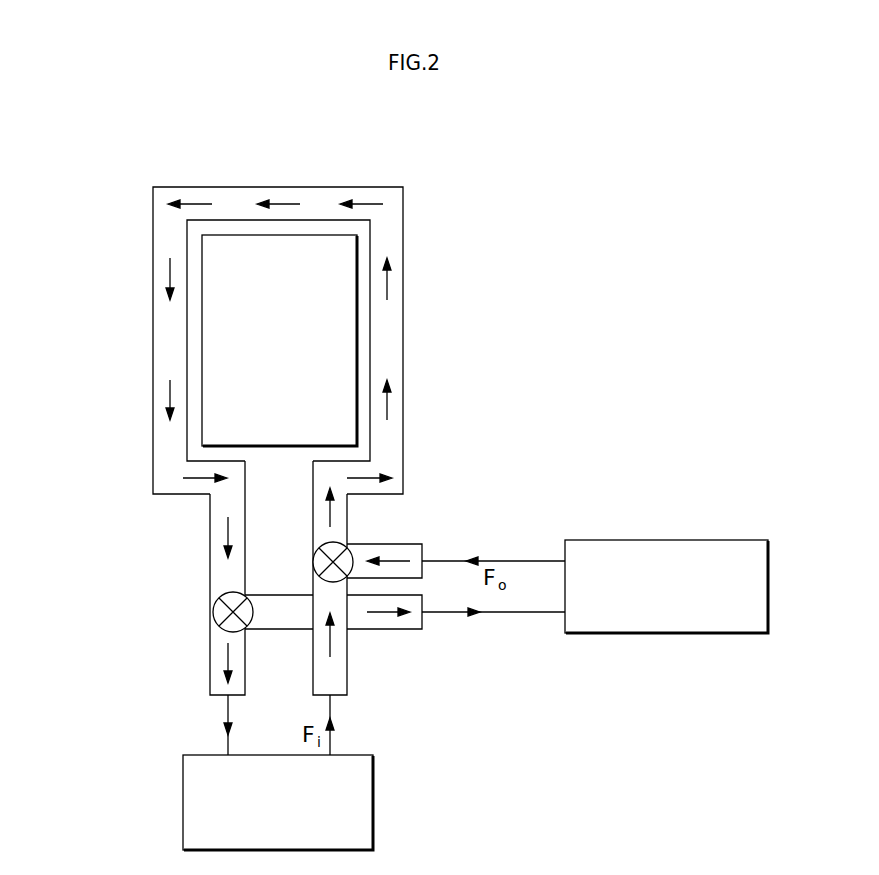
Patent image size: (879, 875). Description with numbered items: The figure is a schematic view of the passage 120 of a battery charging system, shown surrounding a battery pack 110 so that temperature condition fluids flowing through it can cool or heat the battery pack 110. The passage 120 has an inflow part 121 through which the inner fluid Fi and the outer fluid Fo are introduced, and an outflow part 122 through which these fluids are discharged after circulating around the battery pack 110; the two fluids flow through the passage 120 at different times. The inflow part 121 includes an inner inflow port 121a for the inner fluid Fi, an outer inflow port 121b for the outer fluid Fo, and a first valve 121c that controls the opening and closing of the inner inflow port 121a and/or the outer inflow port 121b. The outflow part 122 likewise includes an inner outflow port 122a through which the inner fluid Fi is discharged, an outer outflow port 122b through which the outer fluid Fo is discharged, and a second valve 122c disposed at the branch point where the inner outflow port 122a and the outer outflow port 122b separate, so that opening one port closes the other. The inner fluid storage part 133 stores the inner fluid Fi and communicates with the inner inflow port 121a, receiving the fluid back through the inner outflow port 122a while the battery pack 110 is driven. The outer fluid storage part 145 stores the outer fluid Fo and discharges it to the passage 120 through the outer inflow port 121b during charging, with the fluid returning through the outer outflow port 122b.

The battery pack 110 is at (357, 338).
The passage 120 is at (141, 172).
The inflow part 121 is at (439, 603).
The inner inflow port 121a is at (338, 696).
The outer inflow port 121b is at (422, 555).
The first valve 121c is at (333, 543).
The outflow part 122 is at (312, 636).
The inner outflow port 122a is at (221, 700).
The outer outflow port 122b is at (422, 628).
The second valve 122c is at (191, 612).
The inner fluid storage part 133 is at (375, 802).
The outer fluid storage part 145 is at (665, 540).